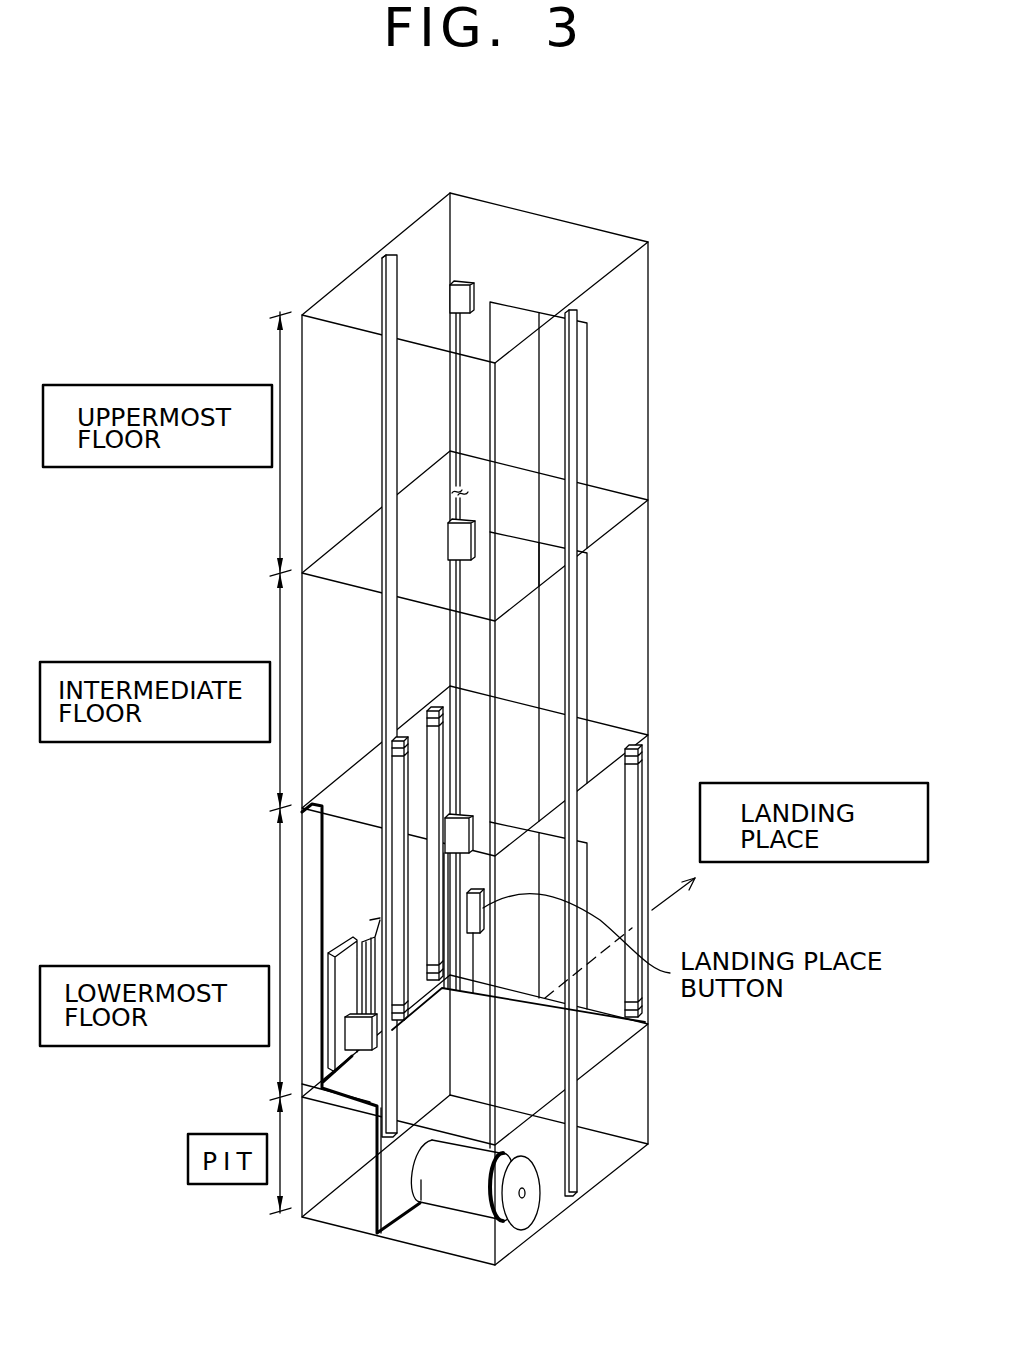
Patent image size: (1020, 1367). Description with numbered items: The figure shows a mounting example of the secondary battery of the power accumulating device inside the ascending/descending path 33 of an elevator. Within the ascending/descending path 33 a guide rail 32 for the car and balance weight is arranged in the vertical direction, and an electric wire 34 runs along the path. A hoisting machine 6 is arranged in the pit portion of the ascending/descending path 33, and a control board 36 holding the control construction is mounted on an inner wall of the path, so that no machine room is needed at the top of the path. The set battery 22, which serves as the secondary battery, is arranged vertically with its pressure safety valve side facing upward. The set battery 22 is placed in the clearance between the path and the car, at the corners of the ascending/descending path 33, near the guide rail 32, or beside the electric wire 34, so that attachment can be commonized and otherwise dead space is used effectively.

The ascending/descending path 33 is at (646, 378).
The guide rail 32 is at (382, 640).
The electric wire 34 is at (458, 397).
The set battery 22 is at (412, 745).
The control board 36 is at (320, 922).
The hoisting machine 6 is at (450, 1194).